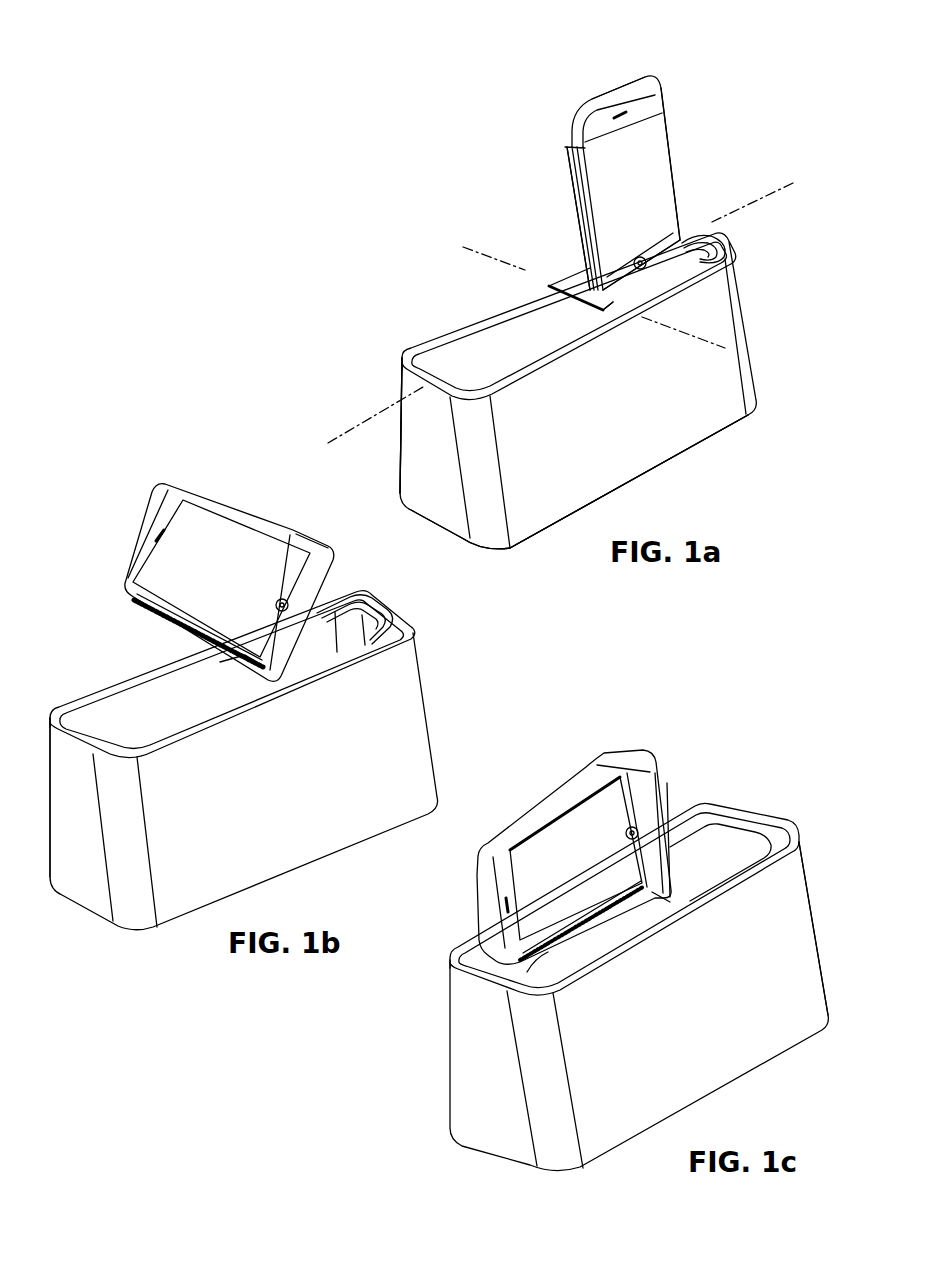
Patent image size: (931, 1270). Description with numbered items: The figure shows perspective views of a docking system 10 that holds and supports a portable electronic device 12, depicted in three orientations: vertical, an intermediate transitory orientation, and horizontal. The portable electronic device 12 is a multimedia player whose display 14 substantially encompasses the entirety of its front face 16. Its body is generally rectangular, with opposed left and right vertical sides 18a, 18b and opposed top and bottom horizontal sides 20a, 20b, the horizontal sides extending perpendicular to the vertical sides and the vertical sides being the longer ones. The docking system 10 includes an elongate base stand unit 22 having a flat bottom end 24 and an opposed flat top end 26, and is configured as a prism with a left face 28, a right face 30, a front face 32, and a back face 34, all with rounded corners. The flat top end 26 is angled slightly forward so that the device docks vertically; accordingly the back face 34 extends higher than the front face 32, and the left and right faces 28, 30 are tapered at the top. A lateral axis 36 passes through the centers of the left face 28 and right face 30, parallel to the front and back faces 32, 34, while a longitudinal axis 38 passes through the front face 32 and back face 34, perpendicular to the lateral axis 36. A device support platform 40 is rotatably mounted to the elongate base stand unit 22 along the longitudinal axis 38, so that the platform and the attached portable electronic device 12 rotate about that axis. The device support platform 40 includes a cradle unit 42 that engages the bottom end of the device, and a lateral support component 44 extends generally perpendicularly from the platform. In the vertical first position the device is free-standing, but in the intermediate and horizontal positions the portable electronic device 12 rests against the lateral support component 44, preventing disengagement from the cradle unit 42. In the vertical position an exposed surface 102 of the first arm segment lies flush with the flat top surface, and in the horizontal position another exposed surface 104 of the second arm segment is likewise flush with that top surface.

In FIG. 1A, the docking system 10 is at (780, 76).
In FIG. 1B, the docking system 10 is at (52, 568).
In FIG. 1C, the docking system 10 is at (787, 760).
In FIG. 1A, the portable electronic device 12 is at (560, 124).
In FIG. 1B, the portable electronic device 12 is at (133, 538).
In FIG. 1C, the portable electronic device 12 is at (468, 870).
In FIG. 1A, the display 14 is at (645, 155).
In FIG. 1A, the front face 16 is at (670, 128).
In FIG. 1A, the left vertical side 18a is at (590, 194).
In FIG. 1A, the right vertical side 18b is at (673, 185).
In FIG. 1A, the top horizontal side 20a is at (608, 90).
In FIG. 1A, the bottom horizontal side 20b is at (680, 259).
In FIG. 1A, the elongate base stand unit 22 is at (720, 366).
In FIG. 1B, the elongate base stand unit 22 is at (410, 742).
In FIG. 1C, the elongate base stand unit 22 is at (793, 960).
In FIG. 1A, the flat bottom end 24 is at (432, 530).
In FIG. 1A, the flat top end 26 is at (413, 336).
In FIG. 1A, the left face 28 is at (435, 466).
In FIG. 1A, the right face 30 is at (738, 307).
In FIG. 1A, the front face 32 is at (657, 430).
In FIG. 1A, the back face 34 is at (402, 385).
In FIG. 1A, the lateral axis 36 is at (763, 202).
In FIG. 1A, the longitudinal axis 38 is at (482, 258).
In FIG. 1A, the device support platform 40 is at (568, 284).
In FIG. 1B, the device support platform 40 is at (336, 558).
In FIG. 1C, the device support platform 40 is at (645, 757).
In FIG. 1B, the cradle unit 42 is at (287, 577).
In FIG. 1A, the lateral support component 44 is at (565, 165).
In FIG. 1B, the lateral support component 44 is at (160, 622).
In FIG. 1C, the lateral support component 44 is at (540, 967).
In FIG. 1A, the exposed surface 102 is at (612, 300).
In FIG. 1C, the exposed surface 104 is at (722, 832).